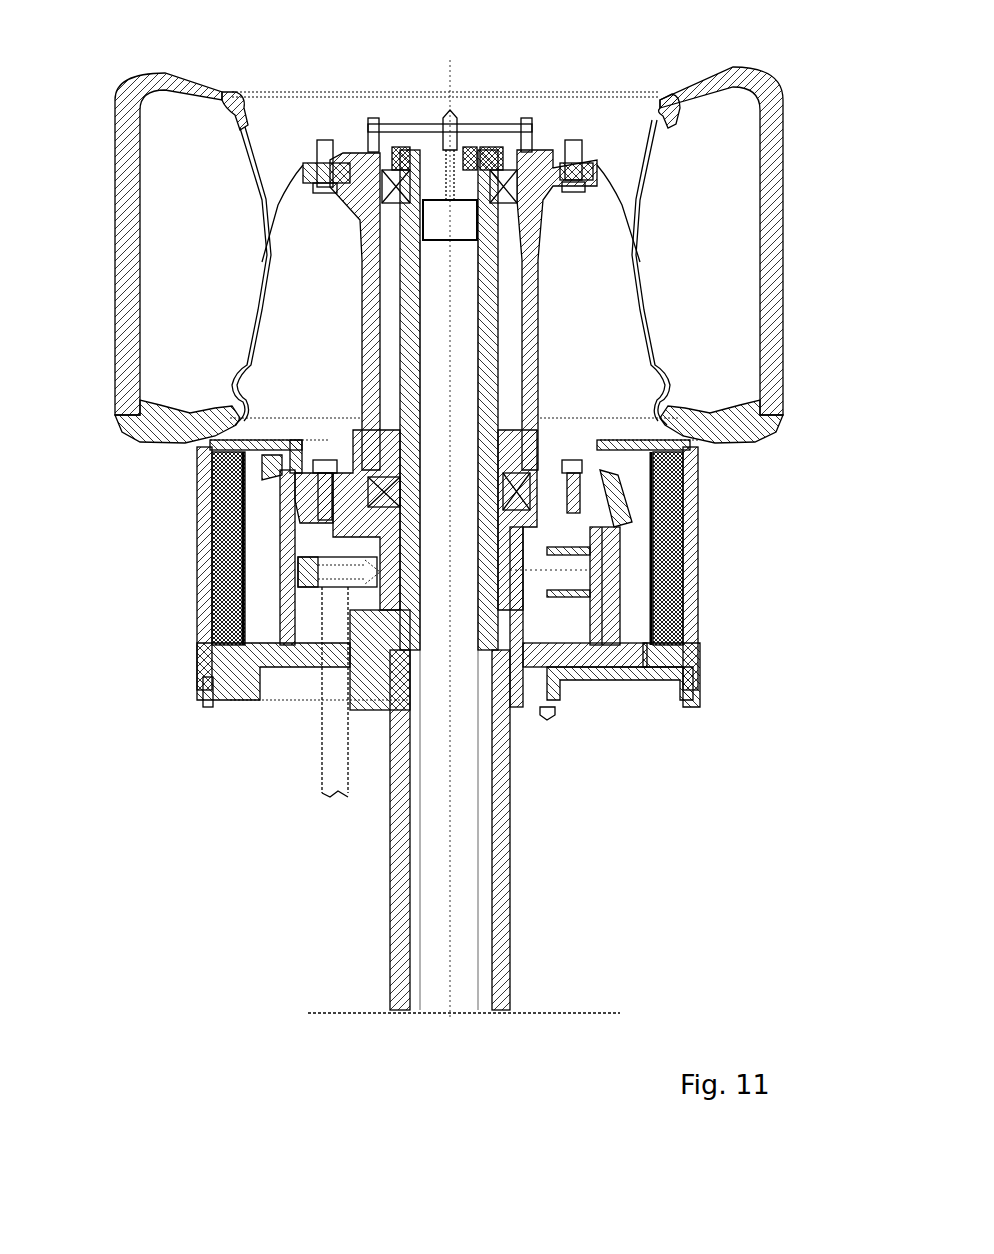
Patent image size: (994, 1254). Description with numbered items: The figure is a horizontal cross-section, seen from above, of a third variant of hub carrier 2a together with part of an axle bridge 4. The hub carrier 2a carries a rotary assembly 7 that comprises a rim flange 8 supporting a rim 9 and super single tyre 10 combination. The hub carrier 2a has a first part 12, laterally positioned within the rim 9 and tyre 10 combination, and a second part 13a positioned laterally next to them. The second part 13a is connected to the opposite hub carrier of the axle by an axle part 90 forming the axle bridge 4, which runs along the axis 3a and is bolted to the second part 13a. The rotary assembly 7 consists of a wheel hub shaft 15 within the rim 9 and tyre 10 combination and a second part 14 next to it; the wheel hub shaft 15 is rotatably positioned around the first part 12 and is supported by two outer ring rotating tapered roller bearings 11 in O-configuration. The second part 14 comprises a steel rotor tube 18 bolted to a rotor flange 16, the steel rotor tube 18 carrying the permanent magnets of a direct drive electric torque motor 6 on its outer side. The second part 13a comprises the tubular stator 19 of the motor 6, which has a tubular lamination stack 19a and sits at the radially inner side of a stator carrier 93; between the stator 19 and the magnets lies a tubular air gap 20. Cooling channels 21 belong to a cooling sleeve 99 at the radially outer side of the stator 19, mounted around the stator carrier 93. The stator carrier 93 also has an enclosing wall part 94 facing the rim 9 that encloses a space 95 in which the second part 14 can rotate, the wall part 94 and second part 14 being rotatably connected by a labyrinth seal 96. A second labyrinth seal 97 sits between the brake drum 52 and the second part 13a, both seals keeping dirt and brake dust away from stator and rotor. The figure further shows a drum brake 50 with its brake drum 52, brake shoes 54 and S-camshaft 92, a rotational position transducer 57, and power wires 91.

The hub carrier 2a is at (410, 515).
The axis 3a is at (448, 877).
The axle bridge 4 is at (390, 822).
The direct drive electric torque motor 6 is at (727, 630).
The rotary assembly 7 is at (373, 222).
The rim flange 8 is at (538, 160).
The rim 9 is at (630, 345).
The super single tyre 10 is at (780, 318).
The outer ring rotating tapered roller bearings 11 is at (500, 177).
The first part 12 is at (410, 342).
The second part 13a is at (363, 650).
The second part 14 is at (593, 480).
The wheel hub shaft 15 is at (530, 373).
The rotor flange 16 is at (620, 520).
The steel rotor tube 18 is at (600, 551).
The stator 19 is at (778, 548).
The tubular lamination stack 19a is at (655, 578).
The air gap 20 is at (235, 630).
The cooling channels 21 is at (210, 580).
The drum brake 50 is at (310, 570).
The brake drum 52 is at (640, 672).
The brake shoes 54 is at (602, 568).
The rotational position transducer 57 is at (448, 148).
The axle part 90 is at (500, 833).
The power wires 91 is at (547, 713).
The S-camshaft 92 is at (327, 772).
The stator carrier 93 is at (690, 506).
The enclosing wall part 94 is at (290, 456).
The space 95 is at (270, 452).
The labyrinth seal 96 is at (273, 470).
The second labyrinth seal 97 is at (245, 612).
The cooling sleeve 99 is at (205, 598).